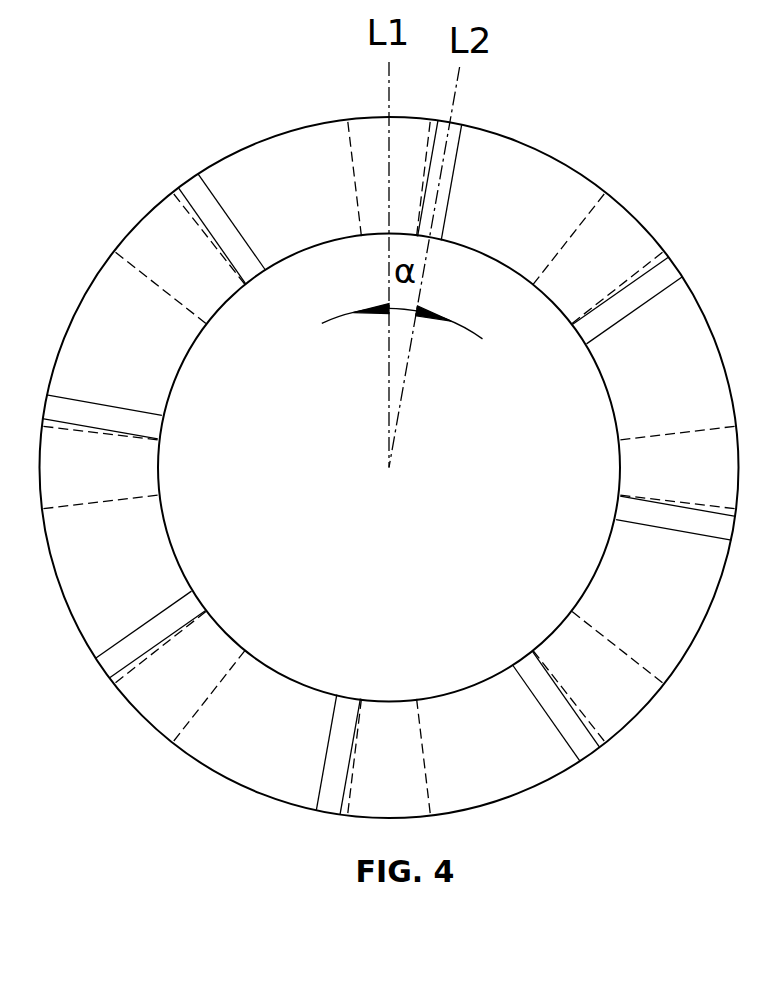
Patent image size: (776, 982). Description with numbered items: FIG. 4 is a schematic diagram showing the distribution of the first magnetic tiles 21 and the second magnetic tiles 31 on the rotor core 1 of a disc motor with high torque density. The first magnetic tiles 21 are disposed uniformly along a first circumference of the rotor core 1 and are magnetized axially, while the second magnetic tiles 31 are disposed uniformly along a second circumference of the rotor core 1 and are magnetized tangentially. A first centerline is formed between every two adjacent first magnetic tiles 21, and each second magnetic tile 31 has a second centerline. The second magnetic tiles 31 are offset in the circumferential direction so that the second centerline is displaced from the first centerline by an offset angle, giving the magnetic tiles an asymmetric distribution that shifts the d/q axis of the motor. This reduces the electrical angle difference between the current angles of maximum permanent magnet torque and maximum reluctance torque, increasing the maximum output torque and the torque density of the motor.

The rotor core 1 is at (157, 238).
The first magnetic tile 21 is at (280, 195).
The second magnetic tile 31 is at (447, 173).